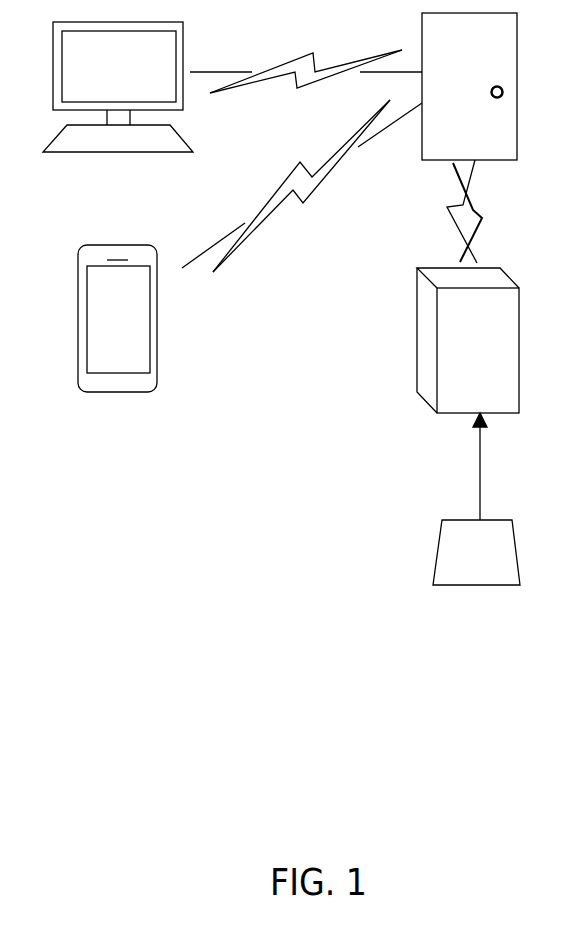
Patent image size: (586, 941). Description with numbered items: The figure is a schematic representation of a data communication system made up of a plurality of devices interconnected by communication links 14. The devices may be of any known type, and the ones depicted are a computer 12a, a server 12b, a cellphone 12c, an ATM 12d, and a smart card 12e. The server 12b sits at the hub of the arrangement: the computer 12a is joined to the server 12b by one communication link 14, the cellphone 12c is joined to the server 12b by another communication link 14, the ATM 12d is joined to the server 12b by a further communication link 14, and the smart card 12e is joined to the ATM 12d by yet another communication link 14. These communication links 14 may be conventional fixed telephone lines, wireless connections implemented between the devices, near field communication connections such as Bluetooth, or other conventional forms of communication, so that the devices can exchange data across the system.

The computer 12a is at (118, 87).
The server 12b is at (469, 86).
The cellphone 12c is at (117, 318).
The ATM 12d is at (468, 340).
The smart card 12e is at (476, 552).
The communication links 14 is at (352, 266).